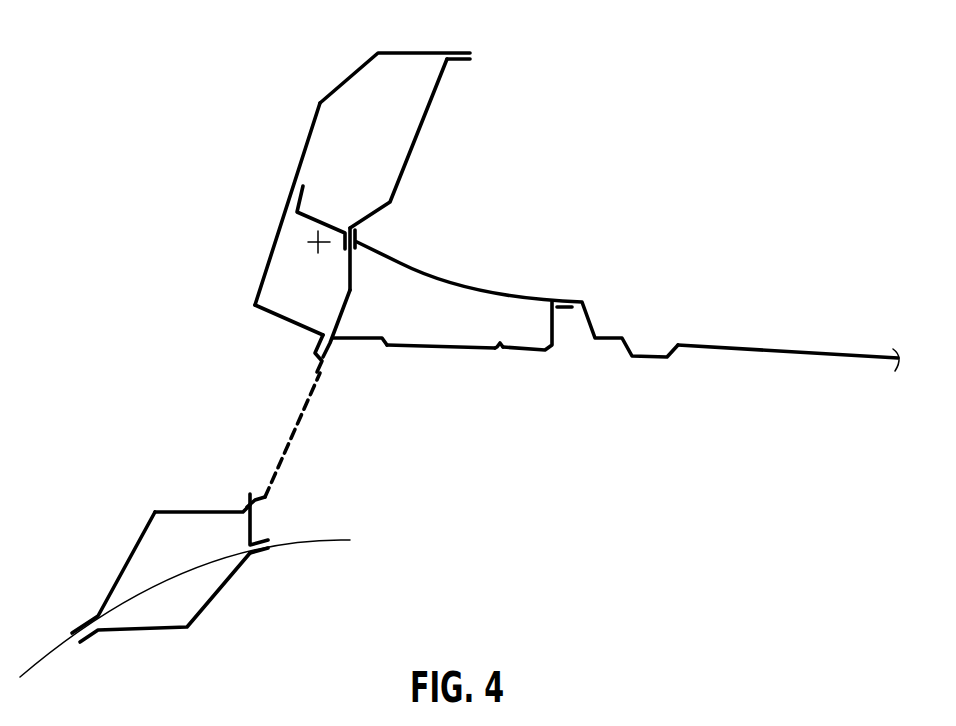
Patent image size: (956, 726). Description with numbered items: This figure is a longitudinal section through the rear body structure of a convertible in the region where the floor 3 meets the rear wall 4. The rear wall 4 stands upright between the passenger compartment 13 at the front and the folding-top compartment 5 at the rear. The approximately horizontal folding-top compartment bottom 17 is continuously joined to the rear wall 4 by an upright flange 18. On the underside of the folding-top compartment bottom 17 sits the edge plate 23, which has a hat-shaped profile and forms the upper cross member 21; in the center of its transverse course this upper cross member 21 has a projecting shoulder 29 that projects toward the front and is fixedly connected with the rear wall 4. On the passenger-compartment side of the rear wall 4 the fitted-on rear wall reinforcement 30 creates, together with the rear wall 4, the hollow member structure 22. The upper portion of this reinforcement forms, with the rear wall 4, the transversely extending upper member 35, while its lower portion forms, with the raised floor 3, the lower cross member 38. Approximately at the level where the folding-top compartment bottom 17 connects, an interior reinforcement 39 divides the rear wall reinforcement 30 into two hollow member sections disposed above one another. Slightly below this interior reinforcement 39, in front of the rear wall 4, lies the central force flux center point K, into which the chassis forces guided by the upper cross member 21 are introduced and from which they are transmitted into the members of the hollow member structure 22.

The floor 3 is at (313, 545).
The rear wall 4 is at (398, 187).
The folding-top compartment 5 is at (736, 131).
The passenger compartment 13 is at (71, 229).
The folding-top compartment bottom 17 is at (768, 352).
The upright flange 18 is at (357, 236).
The upper cross member 21 is at (443, 323).
The hollow member structure 22 is at (254, 302).
The edge plate 23 is at (500, 348).
The projecting shoulder 29 is at (360, 343).
The rear wall reinforcement 30 is at (313, 122).
The transversely extending upper member 35 is at (372, 100).
The lower cross member 38 is at (197, 528).
The interior reinforcement 39 is at (306, 216).
The central force flux center point K is at (333, 233).